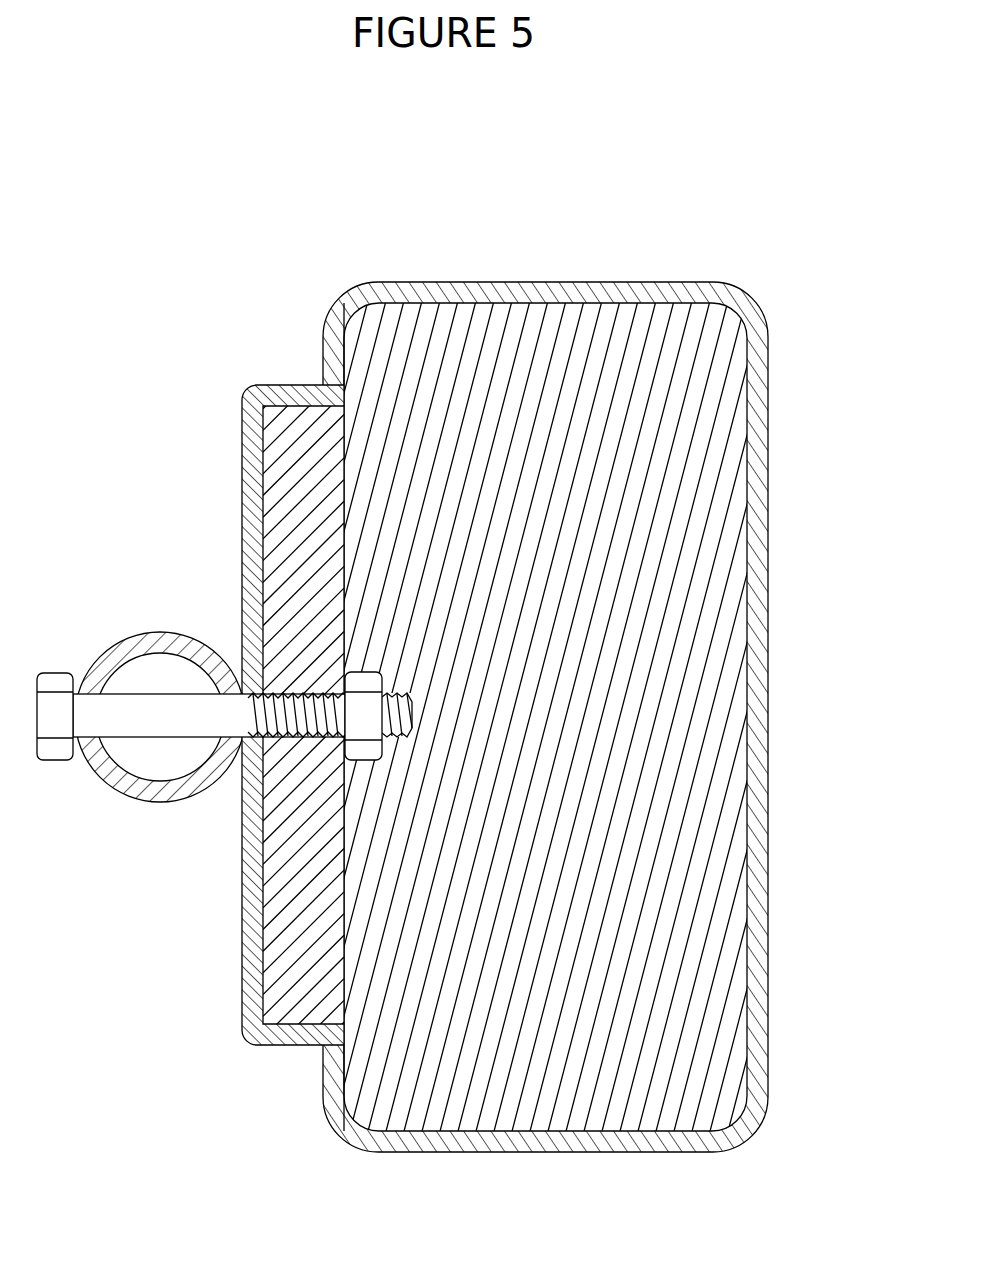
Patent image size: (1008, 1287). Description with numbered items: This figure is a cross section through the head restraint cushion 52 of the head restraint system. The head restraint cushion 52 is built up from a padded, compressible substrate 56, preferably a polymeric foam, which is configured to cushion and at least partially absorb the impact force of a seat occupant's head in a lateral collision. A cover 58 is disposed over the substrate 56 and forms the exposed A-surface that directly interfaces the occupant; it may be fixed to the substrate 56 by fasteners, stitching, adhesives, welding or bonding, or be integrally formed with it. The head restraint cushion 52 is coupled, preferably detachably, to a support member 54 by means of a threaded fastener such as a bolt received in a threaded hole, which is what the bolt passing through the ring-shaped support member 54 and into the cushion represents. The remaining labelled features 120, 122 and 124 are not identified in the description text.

The head restraint cushion 52 is at (547, 637).
The support member 54 is at (138, 635).
The substrate 56 is at (722, 978).
The cover 58 is at (766, 453).
The protrusion interior 120 is at (289, 450).
The shell wall 122 is at (343, 425).
The protrusion 124 is at (226, 667).